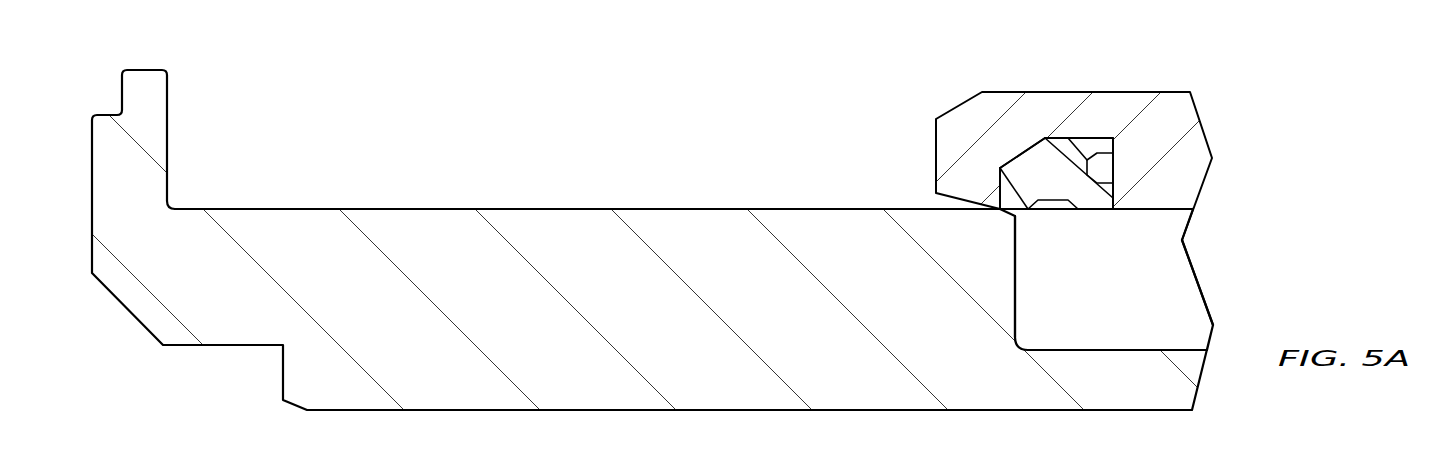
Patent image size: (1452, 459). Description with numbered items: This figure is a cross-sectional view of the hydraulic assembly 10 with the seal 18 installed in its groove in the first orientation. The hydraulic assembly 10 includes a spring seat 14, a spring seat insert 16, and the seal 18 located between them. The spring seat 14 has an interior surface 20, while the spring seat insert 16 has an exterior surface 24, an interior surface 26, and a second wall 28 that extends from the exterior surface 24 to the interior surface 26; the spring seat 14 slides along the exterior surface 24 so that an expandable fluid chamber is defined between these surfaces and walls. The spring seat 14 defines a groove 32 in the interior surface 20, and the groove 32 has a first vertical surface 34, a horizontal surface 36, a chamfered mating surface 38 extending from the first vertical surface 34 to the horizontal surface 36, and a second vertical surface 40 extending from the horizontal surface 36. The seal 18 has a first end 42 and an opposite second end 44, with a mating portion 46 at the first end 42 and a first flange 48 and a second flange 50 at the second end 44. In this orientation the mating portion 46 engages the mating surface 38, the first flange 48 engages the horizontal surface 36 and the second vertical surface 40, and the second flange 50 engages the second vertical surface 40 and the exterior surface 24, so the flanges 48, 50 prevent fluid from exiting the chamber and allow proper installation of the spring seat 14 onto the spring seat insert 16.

The hydraulic assembly 10 is at (318, 88).
The spring seat 14 is at (1158, 92).
The spring seat insert 16 is at (557, 220).
The seal 18 is at (1038, 155).
The interior surface 20 is at (1158, 212).
The exterior surface 24 is at (702, 208).
The interior surface 26 is at (1117, 348).
The second wall 28 is at (1015, 287).
The groove 32 is at (1107, 138).
The first vertical surface 34 is at (1012, 186).
The horizontal surface 36 is at (1077, 138).
The mating surface 38 is at (1038, 198).
The second vertical surface 40 is at (1118, 160).
The first end 42 is at (1000, 170).
The second end 44 is at (1117, 177).
The mating portion 46 is at (1047, 200).
The first flange 48 is at (1113, 138).
The second flange 50 is at (1115, 198).